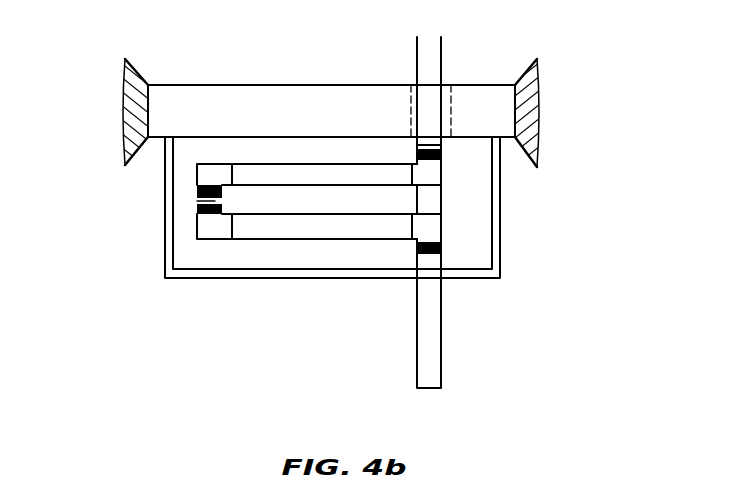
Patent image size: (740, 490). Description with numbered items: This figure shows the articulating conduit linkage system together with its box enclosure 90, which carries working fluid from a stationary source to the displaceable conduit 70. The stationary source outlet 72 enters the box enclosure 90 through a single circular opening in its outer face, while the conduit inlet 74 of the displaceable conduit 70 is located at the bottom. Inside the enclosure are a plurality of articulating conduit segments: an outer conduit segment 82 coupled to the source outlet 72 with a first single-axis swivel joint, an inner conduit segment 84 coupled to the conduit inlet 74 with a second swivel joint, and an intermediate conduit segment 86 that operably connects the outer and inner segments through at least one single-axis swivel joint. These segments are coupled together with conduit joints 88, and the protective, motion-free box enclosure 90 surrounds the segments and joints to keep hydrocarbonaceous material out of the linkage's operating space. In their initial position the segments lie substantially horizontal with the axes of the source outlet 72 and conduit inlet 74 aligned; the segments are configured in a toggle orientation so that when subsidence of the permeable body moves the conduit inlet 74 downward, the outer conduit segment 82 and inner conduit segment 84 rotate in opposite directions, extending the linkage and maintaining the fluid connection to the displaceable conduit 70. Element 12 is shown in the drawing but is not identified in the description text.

The support member 12 is at (170, 62).
The displaceable conduit 70 is at (386, 366).
The source outlet 72 is at (443, 63).
The conduit inlet 74 is at (430, 292).
The outer conduit segment 82 is at (277, 175).
The inner conduit segment 84 is at (340, 230).
The intermediate conduit segment 86 is at (220, 201).
The conduit joints 88 is at (443, 155).
The box enclosure 90 is at (500, 170).